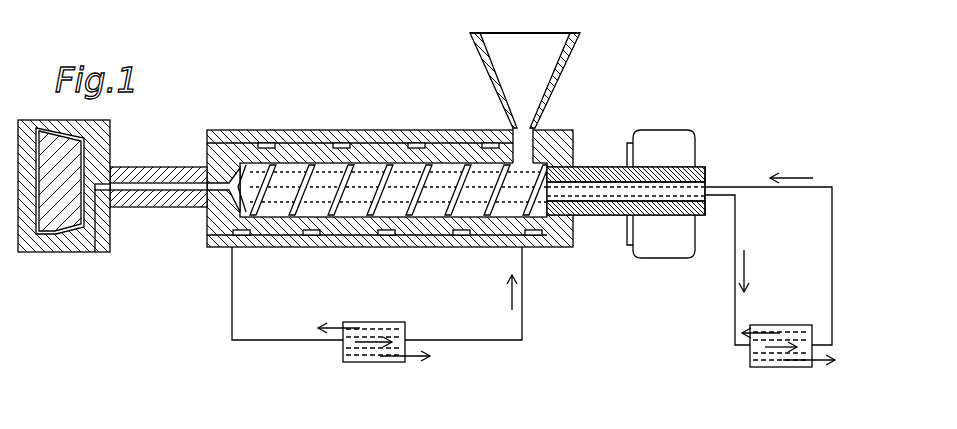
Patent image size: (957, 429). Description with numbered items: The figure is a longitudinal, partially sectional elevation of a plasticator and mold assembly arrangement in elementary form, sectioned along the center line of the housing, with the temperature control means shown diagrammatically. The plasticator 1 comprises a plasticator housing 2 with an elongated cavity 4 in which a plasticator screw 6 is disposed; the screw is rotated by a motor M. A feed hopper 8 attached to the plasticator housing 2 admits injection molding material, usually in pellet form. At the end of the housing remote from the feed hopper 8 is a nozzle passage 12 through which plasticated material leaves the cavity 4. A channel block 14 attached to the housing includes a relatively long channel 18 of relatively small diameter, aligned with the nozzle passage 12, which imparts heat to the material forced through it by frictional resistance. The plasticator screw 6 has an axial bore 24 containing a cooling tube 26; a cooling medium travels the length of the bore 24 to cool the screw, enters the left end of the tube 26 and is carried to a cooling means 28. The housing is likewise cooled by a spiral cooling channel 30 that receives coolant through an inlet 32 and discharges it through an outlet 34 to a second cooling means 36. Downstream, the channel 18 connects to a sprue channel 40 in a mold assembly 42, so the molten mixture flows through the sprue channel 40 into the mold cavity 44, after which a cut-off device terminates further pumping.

The plasticator 1 is at (313, 75).
The plasticator housing 2 is at (355, 130).
The elongated cavity 4 is at (453, 162).
The plasticator screw 6 is at (390, 207).
The feed hopper 8 is at (575, 50).
The nozzle passage 12 is at (217, 190).
The channel block 14 is at (143, 167).
The channel 18 is at (158, 190).
The axial bore 24 is at (592, 187).
The cooling tube 26 is at (637, 190).
The motor M is at (693, 147).
The cooling means 28 is at (773, 317).
The cooling channel 30 is at (260, 143).
The inlet 32 is at (522, 327).
The outlet 34 is at (232, 305).
The cooling means 36 is at (388, 312).
The sprue channel 40 is at (93, 247).
The mold assembly 42 is at (72, 122).
The mold cavity 44 is at (63, 237).